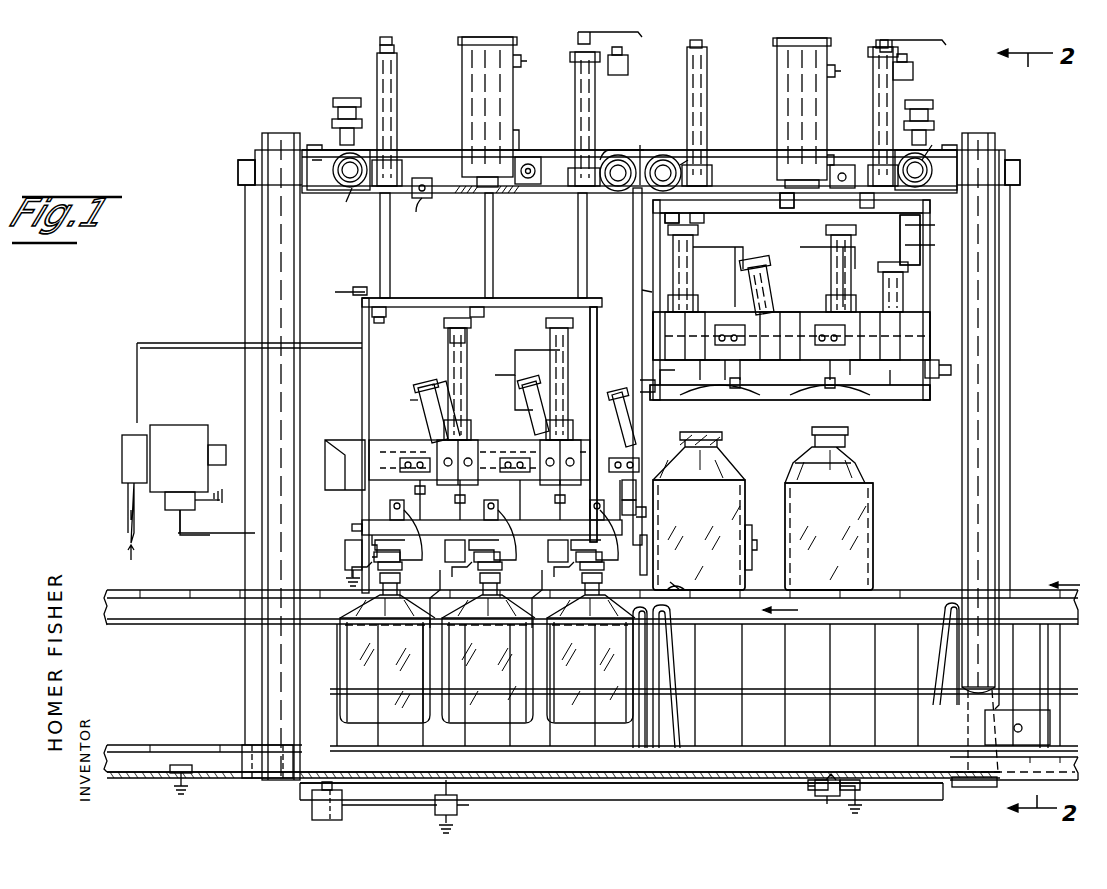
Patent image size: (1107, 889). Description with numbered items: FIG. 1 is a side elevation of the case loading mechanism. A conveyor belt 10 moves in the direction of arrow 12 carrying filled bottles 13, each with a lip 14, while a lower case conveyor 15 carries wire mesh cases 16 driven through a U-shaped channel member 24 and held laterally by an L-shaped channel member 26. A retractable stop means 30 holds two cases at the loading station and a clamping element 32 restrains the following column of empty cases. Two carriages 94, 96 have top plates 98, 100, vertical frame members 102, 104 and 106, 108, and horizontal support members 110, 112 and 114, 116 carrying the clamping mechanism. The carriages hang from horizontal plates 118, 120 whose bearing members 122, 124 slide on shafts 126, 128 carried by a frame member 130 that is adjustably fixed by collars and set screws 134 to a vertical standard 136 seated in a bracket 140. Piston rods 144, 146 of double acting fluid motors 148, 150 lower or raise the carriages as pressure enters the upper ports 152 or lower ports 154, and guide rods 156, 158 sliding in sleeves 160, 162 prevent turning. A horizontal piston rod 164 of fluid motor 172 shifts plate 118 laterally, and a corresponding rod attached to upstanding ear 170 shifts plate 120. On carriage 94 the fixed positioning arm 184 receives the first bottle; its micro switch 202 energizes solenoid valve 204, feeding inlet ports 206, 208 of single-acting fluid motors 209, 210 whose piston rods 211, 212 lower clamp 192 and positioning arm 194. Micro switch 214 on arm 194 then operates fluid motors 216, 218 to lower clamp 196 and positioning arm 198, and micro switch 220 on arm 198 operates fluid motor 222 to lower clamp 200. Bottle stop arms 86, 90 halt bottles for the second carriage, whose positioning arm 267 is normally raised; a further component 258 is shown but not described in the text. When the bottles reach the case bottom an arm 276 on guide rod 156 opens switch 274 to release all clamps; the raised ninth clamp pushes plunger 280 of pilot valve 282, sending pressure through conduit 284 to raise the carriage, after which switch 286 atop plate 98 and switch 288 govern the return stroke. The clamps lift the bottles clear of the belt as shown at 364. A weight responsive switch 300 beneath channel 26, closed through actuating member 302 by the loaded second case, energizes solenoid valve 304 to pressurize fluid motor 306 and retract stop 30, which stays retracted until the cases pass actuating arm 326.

The conveyor belt 10 is at (1030, 590).
The arrow 12 is at (1078, 582).
The bottles 13 is at (745, 501).
The lip 14 is at (713, 426).
The second conveyor belt means 15 is at (226, 778).
The bottle cases 16 is at (944, 592).
The U-shaped channel member 24 is at (698, 800).
The L-shaped channel member 26 is at (800, 778).
The retractable stop means 30 is at (314, 778).
The clamping element 32 is at (1050, 720).
The bottle stop arm 86 is at (607, 575).
The bottle stop arm 90 is at (752, 540).
The carriage 94 is at (446, 288).
The carriage 96 is at (934, 301).
The top plate 98 is at (535, 298).
The top plate 100 is at (851, 213).
The vertical frame member 102 is at (362, 388).
The vertical frame member 104 is at (597, 348).
The vertical frame member 106 is at (633, 273).
The vertical frame member 108 is at (925, 242).
The horizontal support member 110 is at (377, 447).
The horizontal support member 112 is at (362, 520).
The horizontal support member 114 is at (653, 354).
The horizontal support member 116 is at (650, 386).
The horizontal plate 118 is at (426, 180).
The horizontal plate 120 is at (760, 190).
The bearing members 122 is at (645, 132).
The bearing members 124 is at (688, 160).
The horizontal shaft 126 is at (340, 160).
The horizontal shaft 128 is at (661, 156).
The horizontal frame member 130 is at (416, 150).
The collars and set screws 134 is at (238, 168).
The vertical standard 136 is at (290, 335).
The bracket member 140 is at (242, 748).
The piston rod 144 is at (493, 239).
The piston rod 146 is at (802, 218).
The double acting fluid motor 148 is at (462, 87).
The double acting fluid motor 150 is at (777, 90).
The upper port 152 is at (521, 61).
The lower port 154 is at (518, 132).
The vertical guide rod 156 is at (378, 55).
The vertical guide rod 158 is at (702, 46).
The upstanding sleeve 160 is at (377, 82).
The upstanding sleeve 162 is at (687, 90).
The horizontal piston rod 164 is at (508, 192).
The upstanding ear 170 is at (844, 165).
The double acting fluid motor 172 is at (541, 165).
The bottle positioning arm 184 is at (343, 555).
The clamp 192 is at (404, 513).
The positioning arm 194 is at (406, 575).
The clamp 196 is at (480, 543).
The positioning arm 198 is at (508, 575).
The clamp 200 is at (583, 543).
The micro switch 202 is at (365, 554).
The solenoid valve 204 is at (175, 425).
The inlet port 206 is at (417, 401).
The inlet port 208 is at (444, 337).
The single-acting fluid motor 209 is at (436, 384).
The single-acting fluid motor 210 is at (467, 350).
The piston rod 211 is at (539, 488).
The piston rod 212 is at (488, 497).
The micro switch 214 is at (454, 598).
The fluid motor 216 is at (532, 392).
The fluid motor 218 is at (550, 356).
The micro switch 220 is at (554, 599).
The fluid motor 222 is at (642, 395).
The valve 258 is at (333, 108).
The positioning arm 267 is at (700, 454).
The switch 274 is at (948, 78).
The arm 276 is at (642, 37).
The plunger 280 is at (646, 511).
The pilot valve 282 is at (656, 490).
The conduit 284 is at (633, 291).
The switch 286 is at (357, 288).
The switch 288 is at (424, 196).
The weight responsive switch element 300 is at (835, 799).
The switch actuating member 302 is at (824, 779).
The solenoid valve 304 is at (392, 786).
The fluid motor 306 is at (312, 816).
The actuating arm 326 is at (170, 772).
The lifted position 364 is at (684, 602).